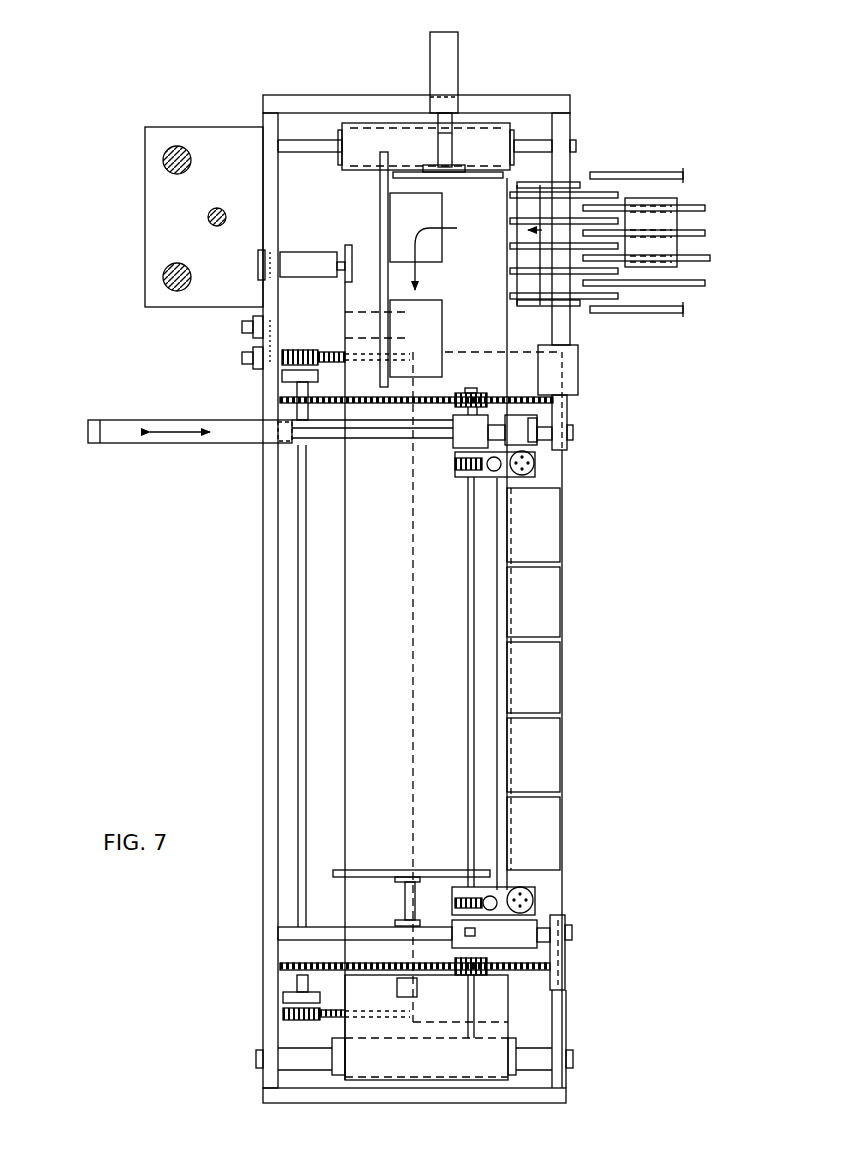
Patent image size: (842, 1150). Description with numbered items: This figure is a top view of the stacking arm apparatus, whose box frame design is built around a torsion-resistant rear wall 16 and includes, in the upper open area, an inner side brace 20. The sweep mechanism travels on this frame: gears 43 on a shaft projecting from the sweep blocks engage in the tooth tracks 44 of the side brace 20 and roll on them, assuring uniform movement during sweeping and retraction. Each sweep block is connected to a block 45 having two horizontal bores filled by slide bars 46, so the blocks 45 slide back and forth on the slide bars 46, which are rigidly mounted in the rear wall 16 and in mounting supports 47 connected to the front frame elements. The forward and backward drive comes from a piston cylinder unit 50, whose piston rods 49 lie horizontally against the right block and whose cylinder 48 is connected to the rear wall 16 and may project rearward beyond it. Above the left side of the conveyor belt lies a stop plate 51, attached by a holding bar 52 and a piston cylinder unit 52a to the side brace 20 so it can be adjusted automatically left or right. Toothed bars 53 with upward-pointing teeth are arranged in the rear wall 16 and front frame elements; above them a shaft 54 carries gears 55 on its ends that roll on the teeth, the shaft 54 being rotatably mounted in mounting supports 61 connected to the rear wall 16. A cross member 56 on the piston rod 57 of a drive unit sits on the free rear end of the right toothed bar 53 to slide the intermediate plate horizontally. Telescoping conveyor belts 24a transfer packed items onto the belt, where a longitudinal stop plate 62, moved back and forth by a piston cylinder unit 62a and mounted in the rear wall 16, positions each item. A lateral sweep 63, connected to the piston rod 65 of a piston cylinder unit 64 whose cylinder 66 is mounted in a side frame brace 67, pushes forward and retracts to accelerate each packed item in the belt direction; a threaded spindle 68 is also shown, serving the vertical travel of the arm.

The rear wall 16 is at (270, 752).
The inner side brace 20 is at (432, 975).
The conveyor belts 24a is at (660, 165).
The gears 43 is at (480, 393).
The tooth tracks 44 is at (445, 397).
The block 45 is at (533, 450).
The slide bars 46 is at (332, 440).
The mounting supports 47 is at (562, 418).
The cylinder 48 is at (130, 445).
The piston rods 49 is at (363, 440).
The piston cylinder unit 50 is at (85, 420).
The stop plate 51 is at (373, 870).
The holding bar 52 is at (402, 900).
The piston cylinder unit 52a is at (398, 988).
The toothed bars 53 is at (340, 352).
The shaft 54 is at (306, 640).
The gears 55 is at (283, 363).
The cross member 56 is at (248, 356).
The piston rod 57 is at (252, 318).
The mounting supports 61 is at (283, 378).
The stop plate 62 is at (580, 118).
The piston cylinder unit 62a is at (292, 262).
The lateral sweep 63 is at (498, 180).
The piston cylinder unit 64 is at (468, 42).
The piston rod 65 is at (445, 152).
The cylinder 66 is at (445, 78).
The side frame brace 67 is at (343, 103).
The threaded spindle 68 is at (208, 216).